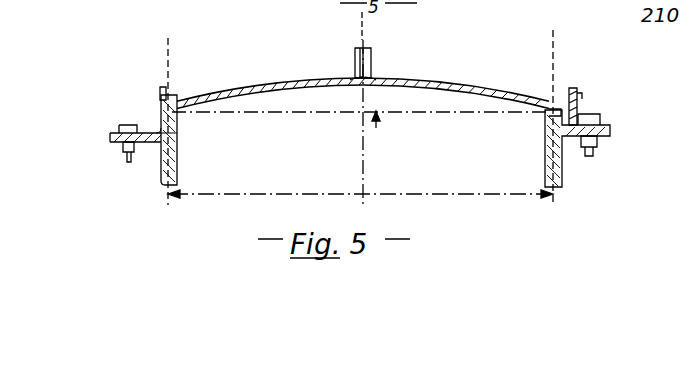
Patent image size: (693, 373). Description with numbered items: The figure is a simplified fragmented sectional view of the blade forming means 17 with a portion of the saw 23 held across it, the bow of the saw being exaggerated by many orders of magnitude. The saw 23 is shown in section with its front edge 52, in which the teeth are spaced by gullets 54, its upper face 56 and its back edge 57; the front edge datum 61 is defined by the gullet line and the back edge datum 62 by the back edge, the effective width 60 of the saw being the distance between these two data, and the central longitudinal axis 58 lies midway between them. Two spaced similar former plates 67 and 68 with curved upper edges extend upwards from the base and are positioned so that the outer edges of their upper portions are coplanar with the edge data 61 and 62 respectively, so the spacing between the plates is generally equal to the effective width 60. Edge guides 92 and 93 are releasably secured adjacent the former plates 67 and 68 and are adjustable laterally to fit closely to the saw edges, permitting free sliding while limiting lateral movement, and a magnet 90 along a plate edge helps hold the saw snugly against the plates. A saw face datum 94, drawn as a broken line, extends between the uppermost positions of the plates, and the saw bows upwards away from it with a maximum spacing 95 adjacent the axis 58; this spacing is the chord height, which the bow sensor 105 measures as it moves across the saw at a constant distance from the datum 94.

The blade forming means 17 is at (505, 53).
The saw 23 is at (283, 38).
The front edge 52 is at (577, 111).
The gullets 54 is at (561, 88).
The upper face 56 is at (477, 86).
The back edge 57 is at (162, 100).
The central longitudinal axis 58 is at (349, 78).
The effective width 60 is at (272, 196).
The front edge datum 61 is at (553, 41).
The back edge datum 62 is at (170, 57).
The former plate 67 is at (548, 148).
The former plate 68 is at (179, 151).
The magnet 90 is at (548, 115).
The edge guide 92 is at (580, 94).
The edge guide 93 is at (160, 96).
The saw face datum 94 is at (295, 118).
The maximum spacing 95 is at (376, 128).
The bow sensor 105 is at (373, 58).